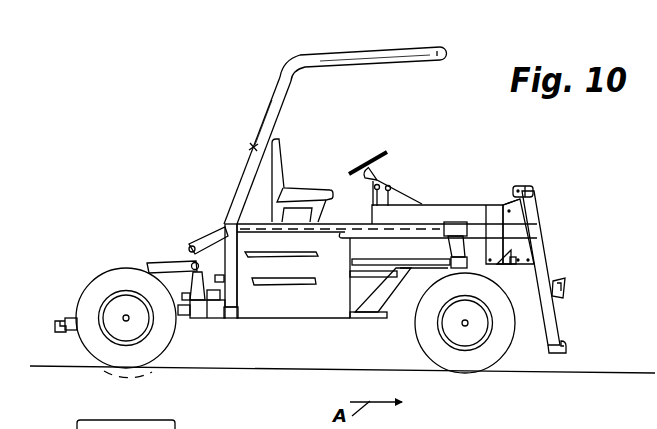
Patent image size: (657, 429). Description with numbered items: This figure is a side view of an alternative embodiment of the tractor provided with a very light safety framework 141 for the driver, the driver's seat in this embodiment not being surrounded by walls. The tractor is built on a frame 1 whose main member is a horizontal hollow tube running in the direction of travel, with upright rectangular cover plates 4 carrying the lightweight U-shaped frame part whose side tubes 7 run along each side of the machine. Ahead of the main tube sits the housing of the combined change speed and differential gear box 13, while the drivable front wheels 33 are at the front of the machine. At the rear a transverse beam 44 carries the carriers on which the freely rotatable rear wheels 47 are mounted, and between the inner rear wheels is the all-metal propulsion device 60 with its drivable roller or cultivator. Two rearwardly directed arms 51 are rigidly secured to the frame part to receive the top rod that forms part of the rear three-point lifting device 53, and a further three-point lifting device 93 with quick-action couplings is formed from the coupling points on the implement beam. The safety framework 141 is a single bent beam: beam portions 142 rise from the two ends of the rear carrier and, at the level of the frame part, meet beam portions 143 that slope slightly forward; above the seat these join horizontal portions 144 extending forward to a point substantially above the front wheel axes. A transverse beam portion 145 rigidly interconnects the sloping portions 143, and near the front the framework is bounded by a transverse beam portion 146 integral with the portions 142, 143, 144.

The frame 1 is at (318, 325).
The cover plates 4 is at (387, 270).
The tubes 7 is at (342, 232).
The combined change speed and differential gear box 13 is at (448, 205).
The front wheels 33 is at (428, 343).
The beam 44 is at (194, 318).
The rear wheel 47 is at (112, 278).
The arms 51 is at (201, 236).
The three-point lifting device 53 is at (62, 311).
The propulsion device 60 is at (105, 379).
The three-point lifting device 93 is at (553, 279).
The safety framework 141 is at (413, 47).
The beam portions 142 is at (235, 296).
The beam portions 143 is at (277, 87).
The horizontal portions 144 is at (354, 36).
The transverse beam portion 145 is at (252, 147).
The transverse beam portions 146 is at (448, 48).